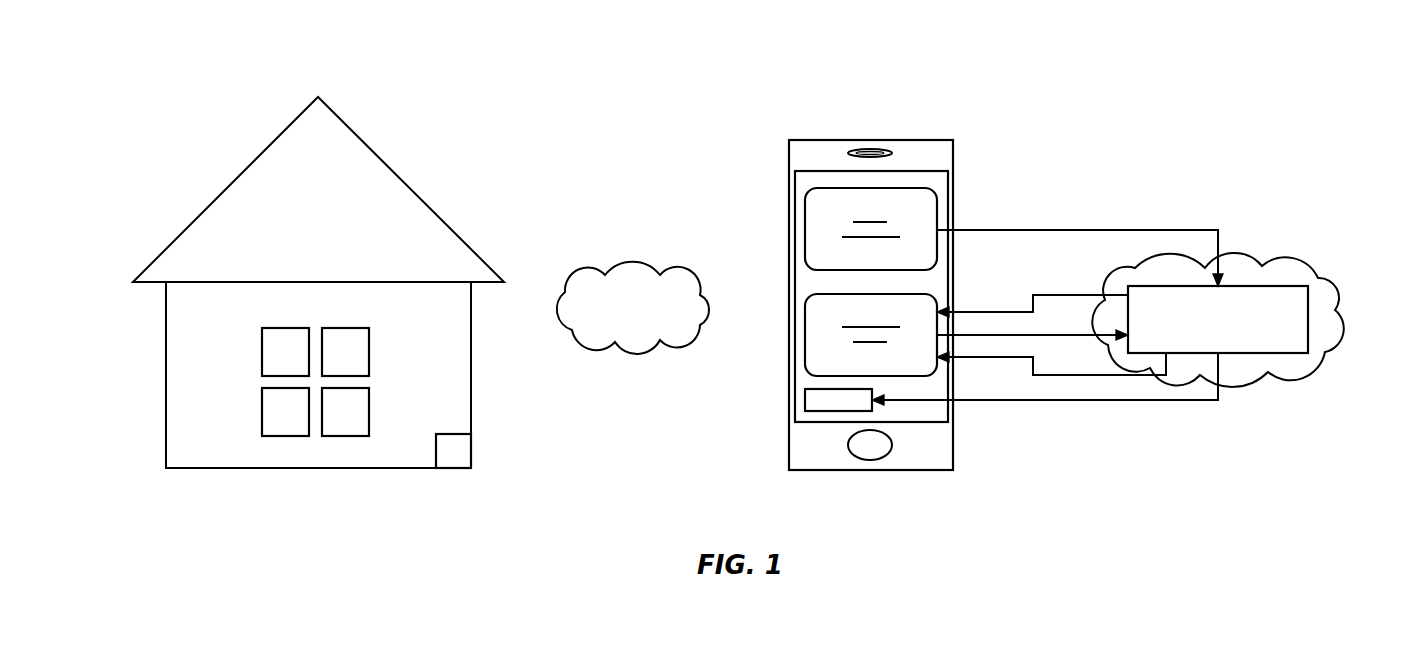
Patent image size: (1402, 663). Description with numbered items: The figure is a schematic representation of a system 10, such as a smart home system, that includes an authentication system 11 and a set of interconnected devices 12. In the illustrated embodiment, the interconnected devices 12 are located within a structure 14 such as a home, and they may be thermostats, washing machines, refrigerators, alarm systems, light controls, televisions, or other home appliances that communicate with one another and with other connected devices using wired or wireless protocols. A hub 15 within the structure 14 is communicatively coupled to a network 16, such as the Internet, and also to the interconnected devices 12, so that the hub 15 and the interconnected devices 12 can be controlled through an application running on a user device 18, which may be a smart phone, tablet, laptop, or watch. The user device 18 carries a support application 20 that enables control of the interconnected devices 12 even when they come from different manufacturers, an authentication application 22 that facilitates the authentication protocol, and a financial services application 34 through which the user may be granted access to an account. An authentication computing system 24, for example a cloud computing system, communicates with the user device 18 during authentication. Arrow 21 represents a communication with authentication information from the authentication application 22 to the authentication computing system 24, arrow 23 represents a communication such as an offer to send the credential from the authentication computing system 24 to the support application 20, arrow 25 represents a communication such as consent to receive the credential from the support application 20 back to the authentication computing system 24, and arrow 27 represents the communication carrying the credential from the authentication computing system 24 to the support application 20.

The system 10 is at (1250, 47).
The authentication system 11 is at (1048, 110).
The interconnected devices 12 is at (262, 350).
The structure 14 is at (412, 188).
The hub 15 is at (436, 450).
The network 16 is at (645, 265).
The user device 18 is at (885, 140).
The support application 20 is at (805, 332).
The arrow 21 is at (1078, 230).
The authentication application 22 is at (805, 225).
The arrow 23 is at (1066, 295).
The authentication computing system 24 is at (1290, 262).
The arrow 25 is at (1022, 335).
The arrow 27 is at (1078, 400).
The financial services application 34 is at (805, 397).